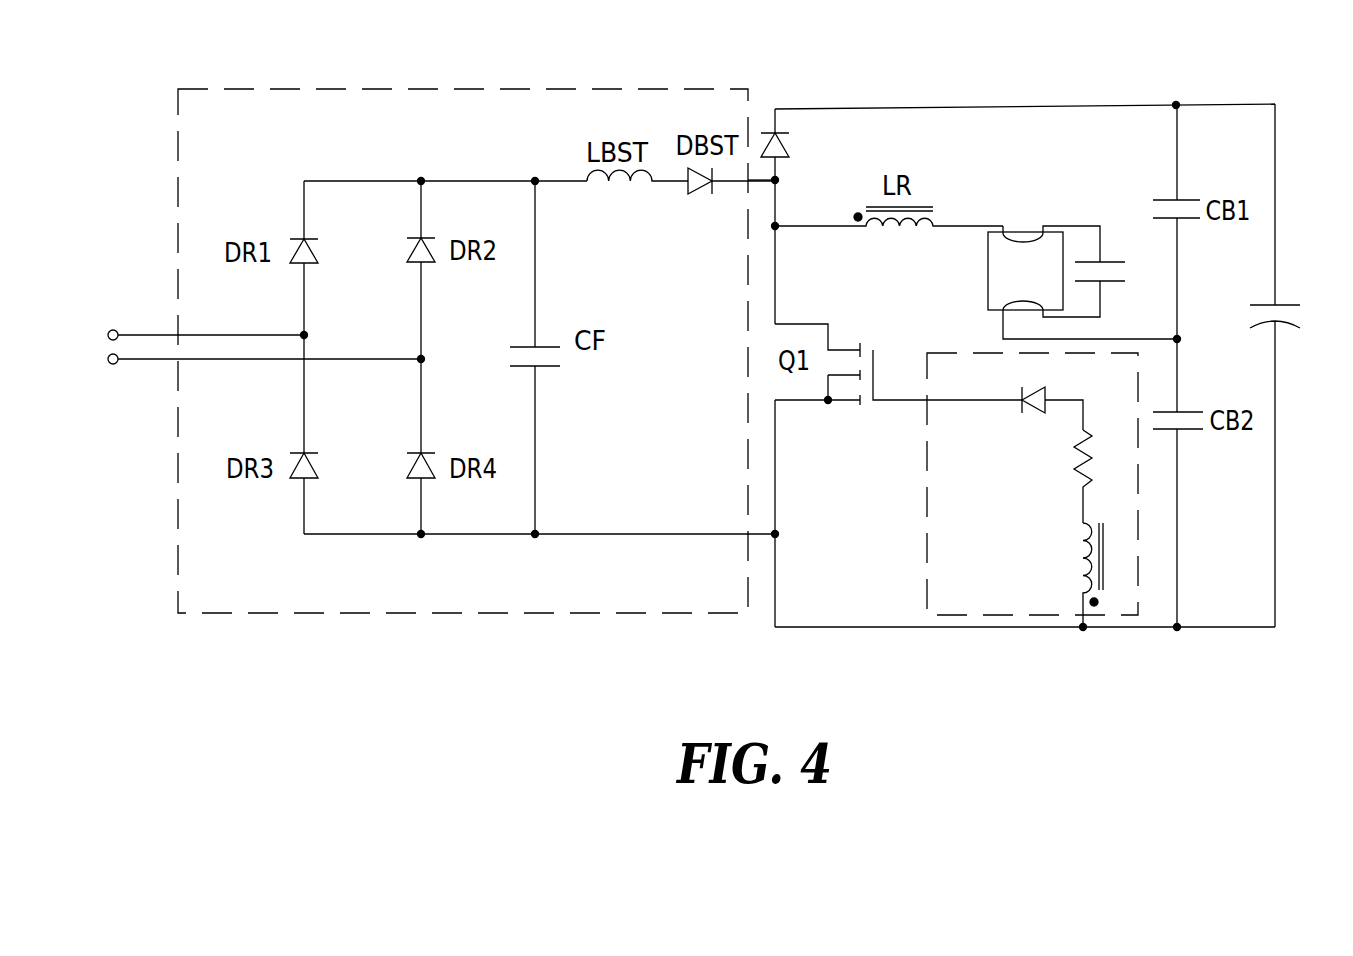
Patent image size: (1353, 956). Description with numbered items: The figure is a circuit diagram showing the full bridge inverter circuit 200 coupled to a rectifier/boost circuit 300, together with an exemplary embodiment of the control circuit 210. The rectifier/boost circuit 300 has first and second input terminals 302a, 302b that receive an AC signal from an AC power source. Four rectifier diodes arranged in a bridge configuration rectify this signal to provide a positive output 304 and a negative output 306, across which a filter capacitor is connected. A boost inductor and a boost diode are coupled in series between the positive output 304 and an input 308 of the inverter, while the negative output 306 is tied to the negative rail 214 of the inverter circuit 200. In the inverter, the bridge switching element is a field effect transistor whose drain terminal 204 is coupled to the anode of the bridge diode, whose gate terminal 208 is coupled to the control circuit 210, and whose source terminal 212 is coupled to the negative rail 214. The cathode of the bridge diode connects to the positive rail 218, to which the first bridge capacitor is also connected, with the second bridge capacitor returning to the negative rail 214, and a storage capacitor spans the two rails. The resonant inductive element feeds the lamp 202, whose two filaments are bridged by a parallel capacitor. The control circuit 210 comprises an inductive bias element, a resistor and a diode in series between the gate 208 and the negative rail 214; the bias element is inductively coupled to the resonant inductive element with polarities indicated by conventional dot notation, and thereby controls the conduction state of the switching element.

The inverter circuit 200 is at (1092, 85).
The lamp 202 is at (988, 272).
The drain terminal 204 is at (808, 324).
The gate terminal 208 is at (895, 403).
The control circuit 210 is at (990, 353).
The source terminal 212 is at (820, 403).
The negative rail 214 is at (877, 627).
The positive rail 218 is at (933, 108).
The rectifier/boost circuit 300 is at (432, 89).
The first input terminal 302a is at (115, 328).
The second input terminal 302b is at (117, 365).
The positive output 304 is at (357, 181).
The negative output 306 is at (467, 535).
The input of the inverter 308 is at (778, 179).